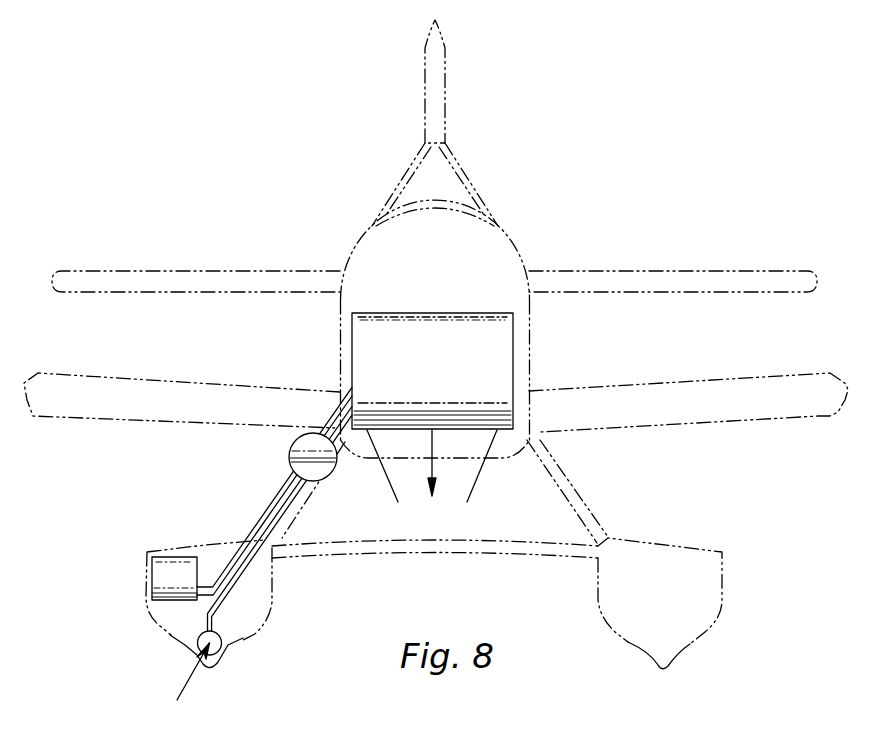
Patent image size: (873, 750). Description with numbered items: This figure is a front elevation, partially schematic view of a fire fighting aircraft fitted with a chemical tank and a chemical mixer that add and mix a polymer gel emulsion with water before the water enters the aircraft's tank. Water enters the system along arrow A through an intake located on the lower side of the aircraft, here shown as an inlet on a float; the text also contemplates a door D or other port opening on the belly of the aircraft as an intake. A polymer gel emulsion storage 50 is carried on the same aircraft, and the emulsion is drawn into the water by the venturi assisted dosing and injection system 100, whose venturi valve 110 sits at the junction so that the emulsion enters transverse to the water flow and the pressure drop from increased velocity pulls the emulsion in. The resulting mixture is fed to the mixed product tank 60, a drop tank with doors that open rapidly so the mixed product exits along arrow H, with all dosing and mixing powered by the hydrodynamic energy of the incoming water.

The mixed product tank 60 is at (444, 373).
The venturi assisted dosing and injection system 100 is at (342, 424).
The venturi valve 110 is at (290, 453).
The polymer gel emulsion storage 50 is at (165, 580).
The arrow A is at (187, 683).
The door D is at (390, 478).
The arrow H is at (437, 469).